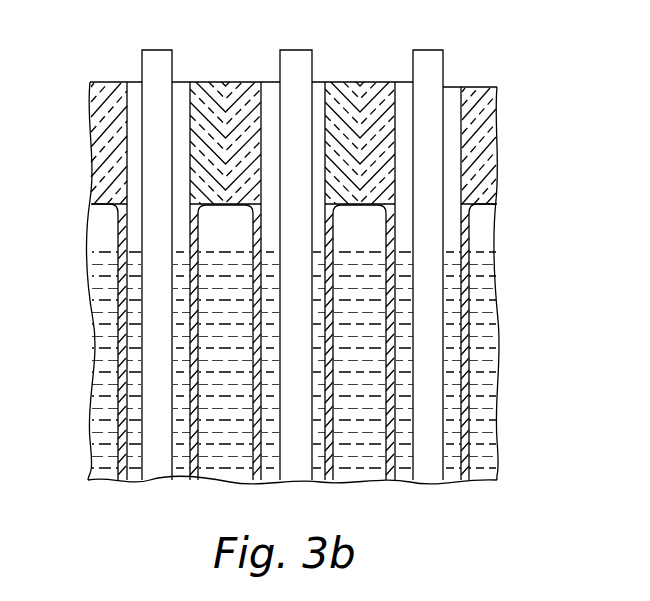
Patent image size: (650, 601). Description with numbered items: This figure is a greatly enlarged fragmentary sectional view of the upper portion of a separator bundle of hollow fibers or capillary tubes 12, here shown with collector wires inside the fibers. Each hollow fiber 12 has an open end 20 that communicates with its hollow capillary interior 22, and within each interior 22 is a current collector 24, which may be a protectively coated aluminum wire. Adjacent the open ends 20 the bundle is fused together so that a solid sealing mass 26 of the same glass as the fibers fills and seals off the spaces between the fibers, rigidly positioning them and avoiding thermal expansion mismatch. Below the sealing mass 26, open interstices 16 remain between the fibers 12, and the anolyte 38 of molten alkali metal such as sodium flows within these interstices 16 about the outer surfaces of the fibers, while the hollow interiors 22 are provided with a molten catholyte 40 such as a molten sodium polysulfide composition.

The hollow fibers or capillary tubes 12 is at (110, 308).
The interstices 16 is at (120, 272).
The open end 20 is at (184, 82).
The hollow capillary interior 22 is at (453, 143).
The current collector 24 is at (158, 58).
The solid sealing mass 26 is at (100, 135).
The anolyte 38 is at (92, 256).
The catholyte 40 is at (268, 331).